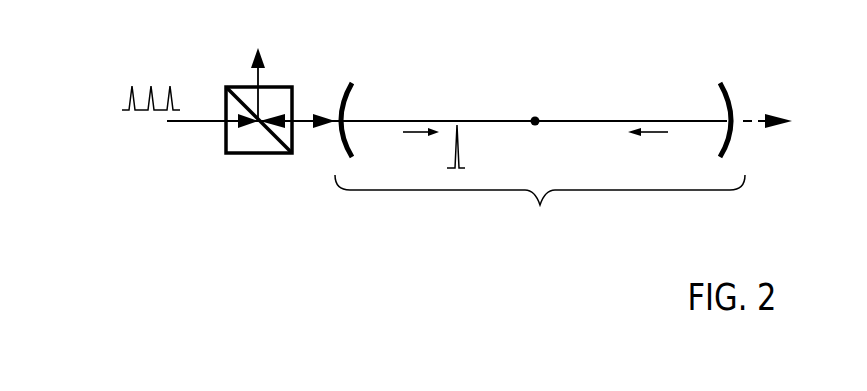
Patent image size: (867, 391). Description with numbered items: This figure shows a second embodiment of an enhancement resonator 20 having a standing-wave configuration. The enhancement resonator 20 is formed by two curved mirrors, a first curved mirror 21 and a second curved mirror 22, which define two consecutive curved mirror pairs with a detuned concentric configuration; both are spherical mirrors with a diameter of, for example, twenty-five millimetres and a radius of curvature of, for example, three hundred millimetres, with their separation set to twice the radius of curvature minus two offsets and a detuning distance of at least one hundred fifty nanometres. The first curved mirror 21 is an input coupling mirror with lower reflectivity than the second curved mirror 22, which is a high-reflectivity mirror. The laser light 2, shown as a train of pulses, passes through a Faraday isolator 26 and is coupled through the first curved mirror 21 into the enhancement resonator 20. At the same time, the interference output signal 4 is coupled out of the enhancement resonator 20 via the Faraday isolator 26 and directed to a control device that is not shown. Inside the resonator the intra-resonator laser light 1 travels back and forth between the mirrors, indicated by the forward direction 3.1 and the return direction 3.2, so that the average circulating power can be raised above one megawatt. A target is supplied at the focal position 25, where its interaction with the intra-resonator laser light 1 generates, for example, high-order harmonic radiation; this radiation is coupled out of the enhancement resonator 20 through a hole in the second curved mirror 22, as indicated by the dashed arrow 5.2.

The intra-resonator laser light 1 is at (463, 146).
The laser light 2 is at (140, 77).
The forward propagation direction 3.1 is at (413, 142).
The backward propagation direction 3.2 is at (645, 138).
The interference output signal 4 is at (253, 77).
The dashed arrow 5.2 is at (767, 102).
The enhancement resonator 20 is at (529, 238).
The first curved mirror 21 is at (343, 148).
The second curved mirror 22 is at (727, 147).
The focal position 25 is at (538, 117).
The Faraday isolator 26 is at (227, 148).